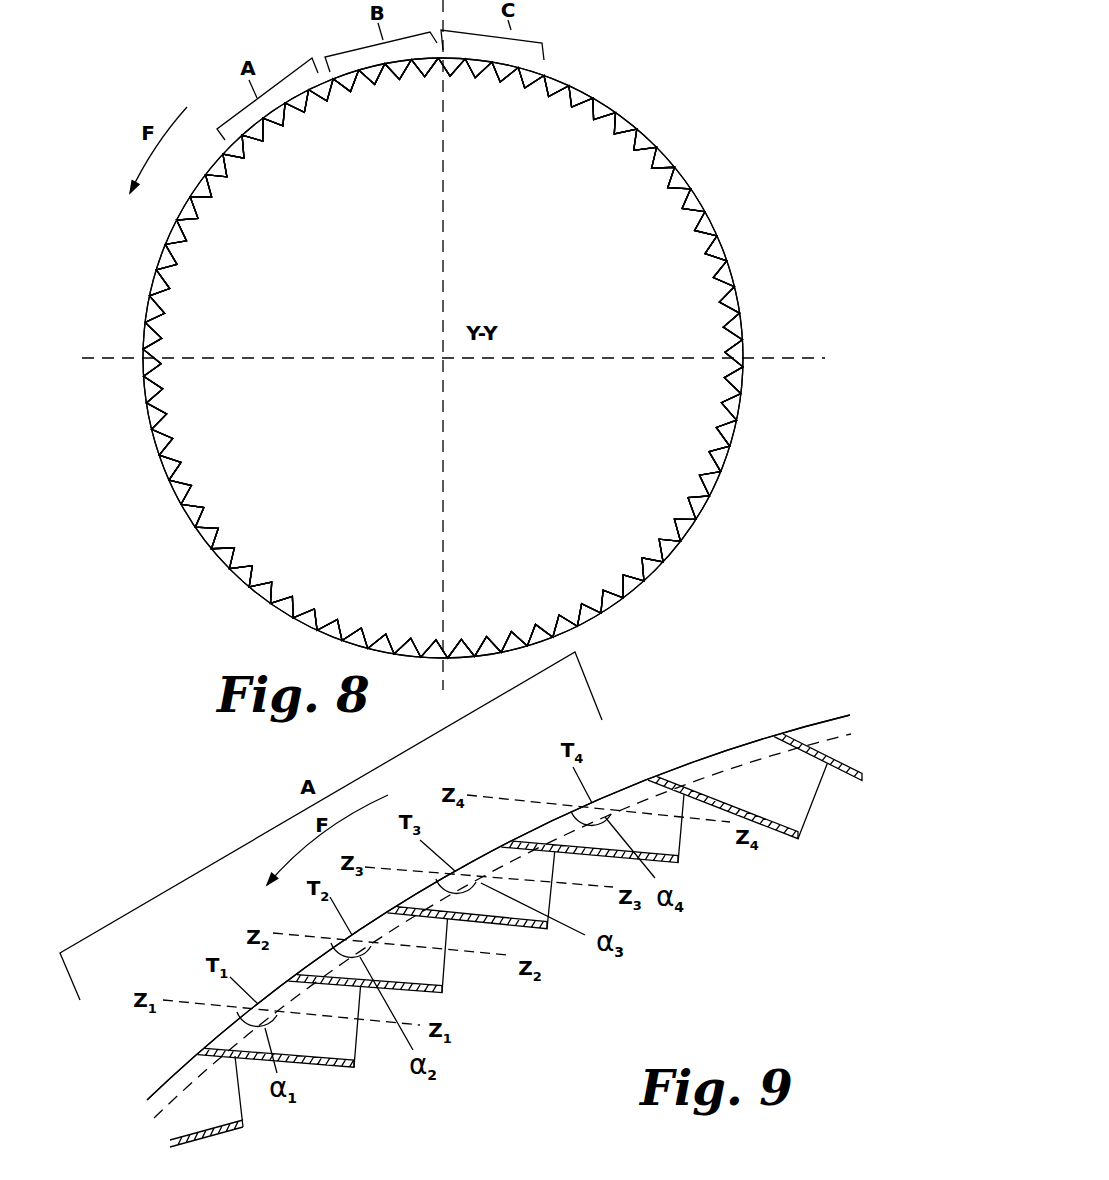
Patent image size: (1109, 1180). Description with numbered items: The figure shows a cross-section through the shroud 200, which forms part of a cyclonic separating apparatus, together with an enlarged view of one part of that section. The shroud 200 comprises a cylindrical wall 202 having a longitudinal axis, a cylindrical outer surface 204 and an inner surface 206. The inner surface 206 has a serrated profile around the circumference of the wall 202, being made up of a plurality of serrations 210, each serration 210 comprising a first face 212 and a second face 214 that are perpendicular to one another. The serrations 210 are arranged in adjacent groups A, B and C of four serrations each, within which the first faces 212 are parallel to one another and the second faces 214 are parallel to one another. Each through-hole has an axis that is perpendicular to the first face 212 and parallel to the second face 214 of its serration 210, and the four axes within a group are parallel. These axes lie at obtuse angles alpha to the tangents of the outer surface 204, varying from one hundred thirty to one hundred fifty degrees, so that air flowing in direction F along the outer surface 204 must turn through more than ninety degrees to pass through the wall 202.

In FIG. 8, the shroud 200 is at (745, 215).
In FIG. 9, the shroud 200 is at (765, 925).
In FIG. 8, the cylindrical wall 202 is at (673, 160).
In FIG. 8, the cylindrical outer surface 204 is at (625, 113).
In FIG. 9, the cylindrical outer surface 204 is at (747, 742).
In FIG. 8, the inner surface 206 is at (208, 187).
In FIG. 9, the inner surface 206 is at (233, 1130).
In FIG. 8, the serration 210 is at (158, 292).
In FIG. 8, the first face 212 is at (298, 106).
In FIG. 9, the first face 212 is at (683, 837).
In FIG. 8, the second face 214 is at (290, 111).
In FIG. 9, the second face 214 is at (672, 860).